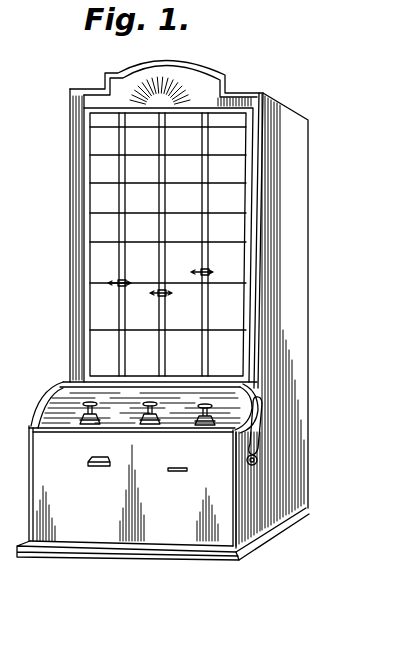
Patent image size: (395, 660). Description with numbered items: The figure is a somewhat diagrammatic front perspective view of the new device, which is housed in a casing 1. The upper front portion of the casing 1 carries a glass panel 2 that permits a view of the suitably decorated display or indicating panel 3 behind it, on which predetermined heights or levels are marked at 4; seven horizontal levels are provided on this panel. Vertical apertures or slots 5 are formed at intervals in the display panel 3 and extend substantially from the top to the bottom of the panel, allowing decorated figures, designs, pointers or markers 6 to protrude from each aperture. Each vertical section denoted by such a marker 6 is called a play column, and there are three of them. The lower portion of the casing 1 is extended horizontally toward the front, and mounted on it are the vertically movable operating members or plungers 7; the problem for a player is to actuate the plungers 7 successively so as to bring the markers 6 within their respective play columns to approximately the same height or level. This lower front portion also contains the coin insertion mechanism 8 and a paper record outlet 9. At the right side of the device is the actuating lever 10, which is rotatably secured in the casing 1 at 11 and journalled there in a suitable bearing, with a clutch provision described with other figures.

The casing 1 is at (300, 252).
The glass panel 2 is at (168, 245).
The display or indicating panel 3 is at (168, 228).
The marked heights or levels 4 is at (221, 188).
The vertical apertures or slots 5 is at (122, 113).
The pointers or markers 6 is at (118, 281).
The plungers 7 is at (147, 402).
The coin insertion mechanism 8 is at (95, 458).
The paper record outlet 9 is at (187, 466).
The actuating lever 10 is at (262, 408).
The pivot of actuating lever 11 is at (258, 466).